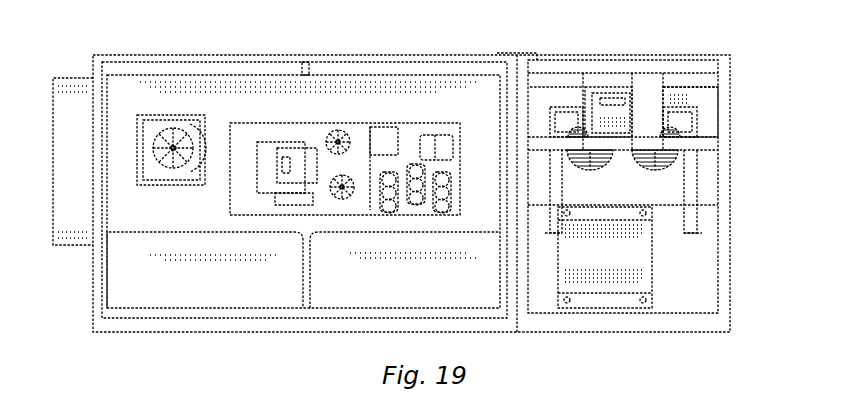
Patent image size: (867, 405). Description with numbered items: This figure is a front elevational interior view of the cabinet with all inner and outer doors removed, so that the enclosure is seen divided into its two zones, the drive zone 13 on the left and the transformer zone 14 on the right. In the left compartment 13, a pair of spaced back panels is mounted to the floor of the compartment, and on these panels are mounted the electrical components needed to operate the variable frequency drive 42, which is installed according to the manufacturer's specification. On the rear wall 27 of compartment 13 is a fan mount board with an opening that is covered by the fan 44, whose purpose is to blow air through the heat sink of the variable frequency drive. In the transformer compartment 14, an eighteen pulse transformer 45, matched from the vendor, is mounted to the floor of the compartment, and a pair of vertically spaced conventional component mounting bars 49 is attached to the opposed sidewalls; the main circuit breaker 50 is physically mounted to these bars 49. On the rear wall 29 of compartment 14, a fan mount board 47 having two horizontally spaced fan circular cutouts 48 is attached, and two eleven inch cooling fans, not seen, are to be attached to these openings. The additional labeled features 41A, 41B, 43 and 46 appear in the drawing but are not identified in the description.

The drive zone 13 is at (398, 103).
The transformer zone 14 is at (671, 55).
The rear wall 27 is at (236, 116).
The rear wall 29 is at (698, 281).
The battery compartment 41A is at (224, 288).
The battery compartment 41B is at (410, 282).
The variable frequency drive 42 is at (292, 123).
The fan housing 43 is at (144, 188).
The fan 44 is at (178, 186).
The 18 pulse transformer 45 is at (653, 290).
The connector block 46 is at (612, 230).
The fan mount board 47 is at (682, 193).
The fan circular cutouts 48 is at (680, 153).
The component mounting bars 49 is at (692, 83).
The main circuit breaker 50 is at (605, 94).